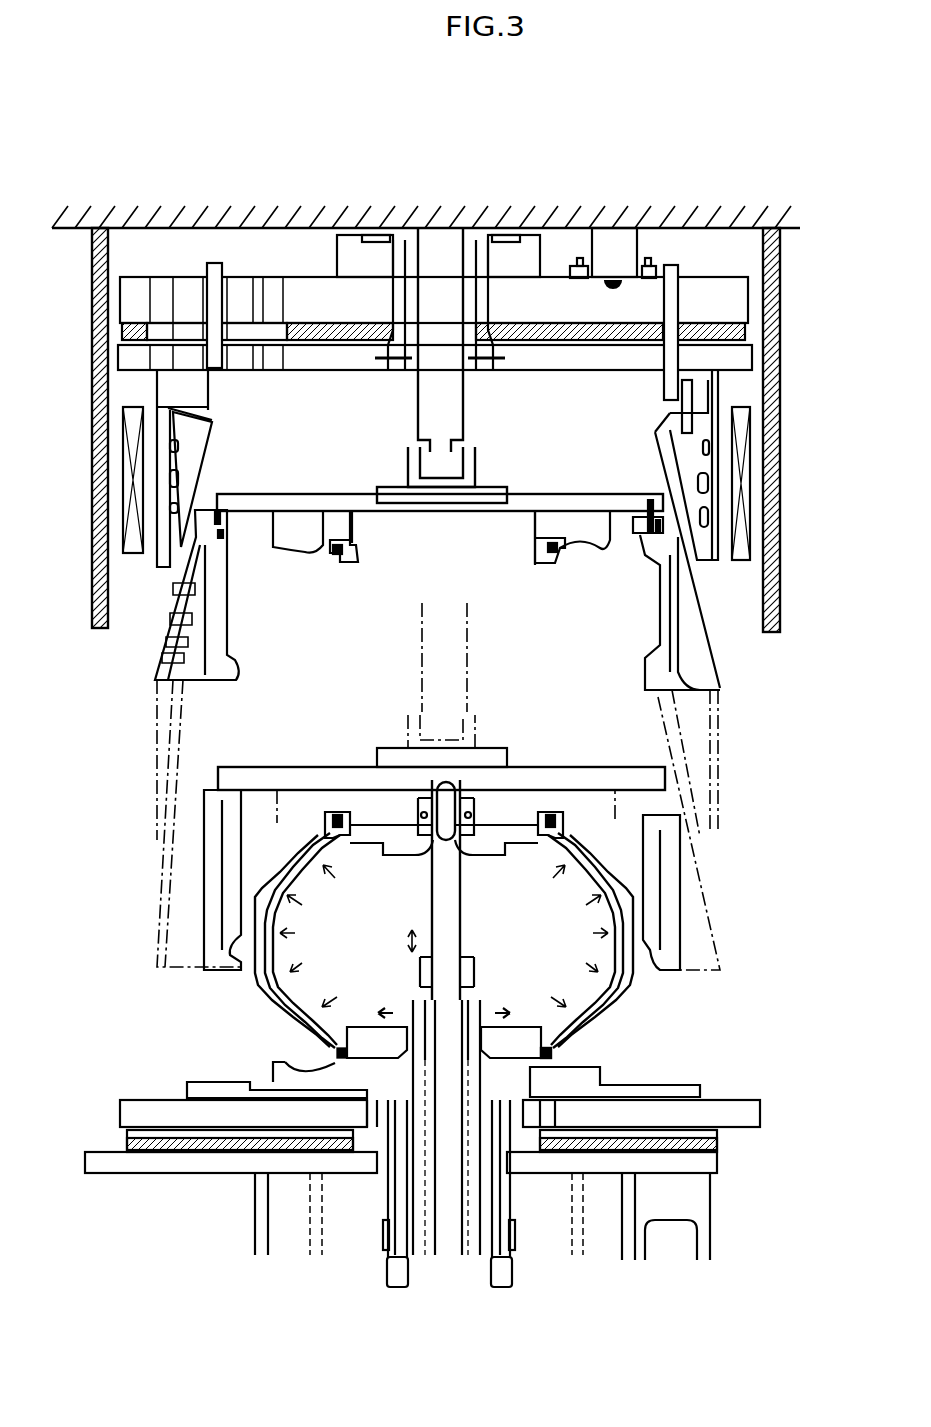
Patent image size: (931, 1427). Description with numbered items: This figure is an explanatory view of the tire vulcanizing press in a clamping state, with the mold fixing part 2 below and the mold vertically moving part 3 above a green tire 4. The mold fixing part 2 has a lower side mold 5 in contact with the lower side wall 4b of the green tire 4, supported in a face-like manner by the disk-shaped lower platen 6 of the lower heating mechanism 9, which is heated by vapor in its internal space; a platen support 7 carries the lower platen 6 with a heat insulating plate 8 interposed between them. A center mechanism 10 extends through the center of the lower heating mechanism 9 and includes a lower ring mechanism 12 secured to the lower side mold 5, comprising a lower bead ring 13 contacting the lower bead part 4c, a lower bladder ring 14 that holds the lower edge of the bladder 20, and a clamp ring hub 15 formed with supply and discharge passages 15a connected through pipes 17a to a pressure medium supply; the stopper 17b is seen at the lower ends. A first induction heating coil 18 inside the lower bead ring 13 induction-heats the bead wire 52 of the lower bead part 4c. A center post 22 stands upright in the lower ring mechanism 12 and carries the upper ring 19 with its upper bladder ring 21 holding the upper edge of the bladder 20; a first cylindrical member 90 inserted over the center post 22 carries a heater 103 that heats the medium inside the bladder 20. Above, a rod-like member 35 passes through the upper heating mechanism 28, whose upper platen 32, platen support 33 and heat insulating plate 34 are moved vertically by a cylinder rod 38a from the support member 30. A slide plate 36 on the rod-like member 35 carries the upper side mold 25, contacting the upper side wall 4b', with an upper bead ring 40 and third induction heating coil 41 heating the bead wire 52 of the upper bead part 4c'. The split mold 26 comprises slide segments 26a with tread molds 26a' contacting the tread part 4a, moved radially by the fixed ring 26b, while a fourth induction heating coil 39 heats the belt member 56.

The mold fixing part 2 is at (775, 1032).
The mold vertically moving part 3 is at (446, 381).
The green tire 4 is at (512, 950).
The tread part 4a is at (628, 935).
The lower side wall 4b is at (681, 1032).
The upper side wall 4b' is at (512, 940).
The lower bead part 4c is at (597, 1052).
The upper bead part 4c' is at (601, 847).
The lower side mold 5 is at (640, 1085).
The lower platen 6 is at (752, 1122).
The platen support 7 is at (444, 1194).
The heat insulating plate 8 is at (720, 1148).
The lower heating mechanism 9 is at (462, 1172).
The center mechanism 10 is at (459, 1233).
The lower ring mechanism 12 is at (325, 1086).
The lower bead ring 13 is at (278, 1069).
The lower bladder ring 14 is at (372, 1030).
The clamp ring hub 15 is at (478, 1010).
The supply and discharge passages 15a is at (482, 1012).
The pipes 17a is at (388, 1247).
The stopper 17b is at (398, 1287).
The first induction heating coil 18 is at (330, 1054).
The upper ring 19 is at (493, 815).
The bladder 20 is at (260, 975).
The upper bladder ring 21 is at (520, 828).
The center post 22 is at (455, 886).
The upper side mold 25 is at (602, 548).
The split mold 26 is at (497, 670).
The slide segments 26a is at (492, 585).
The tread mold 26a' is at (506, 665).
The fixed ring 26b is at (745, 440).
The upper heating mechanism 28 is at (499, 334).
The support member 30 is at (180, 212).
The upper platen 32 is at (475, 370).
The platen support 33 is at (740, 299).
The heat insulating plate 34 is at (745, 335).
The rod-like member 35 is at (455, 215).
The slide plate 36 is at (553, 496).
The cylinder rod 38a is at (624, 205).
The fourth induction heating coil 39 is at (137, 560).
The upper bead ring 40 is at (545, 548).
The third induction heating coil 41 is at (545, 562).
The bead wire 52 is at (325, 835).
The belt member 56 is at (255, 912).
The first cylindrical member 90 is at (470, 966).
The heater 103 is at (412, 970).